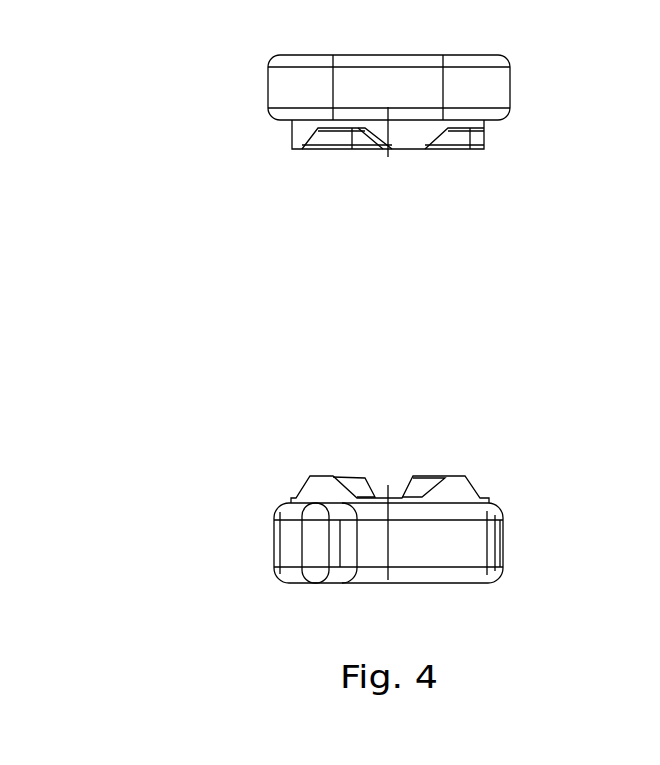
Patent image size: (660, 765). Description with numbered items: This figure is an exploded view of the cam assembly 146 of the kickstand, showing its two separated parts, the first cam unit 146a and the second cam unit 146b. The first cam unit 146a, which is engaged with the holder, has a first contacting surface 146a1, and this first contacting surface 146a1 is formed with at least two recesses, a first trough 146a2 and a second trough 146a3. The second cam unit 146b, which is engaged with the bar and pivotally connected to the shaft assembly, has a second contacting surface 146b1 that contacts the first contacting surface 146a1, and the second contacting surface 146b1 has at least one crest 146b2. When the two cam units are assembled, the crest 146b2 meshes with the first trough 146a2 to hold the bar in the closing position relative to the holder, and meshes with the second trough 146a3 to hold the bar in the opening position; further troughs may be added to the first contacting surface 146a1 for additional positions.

The cam assembly 146 is at (103, 33).
The first cam unit 146a is at (268, 89).
The first contacting surface 146a1 is at (472, 141).
The first trough 146a2 is at (465, 130).
The second trough 146a3 is at (342, 128).
The second cam unit 146b is at (274, 545).
The second contacting surface 146b1 is at (353, 485).
The crest 146b2 is at (457, 477).